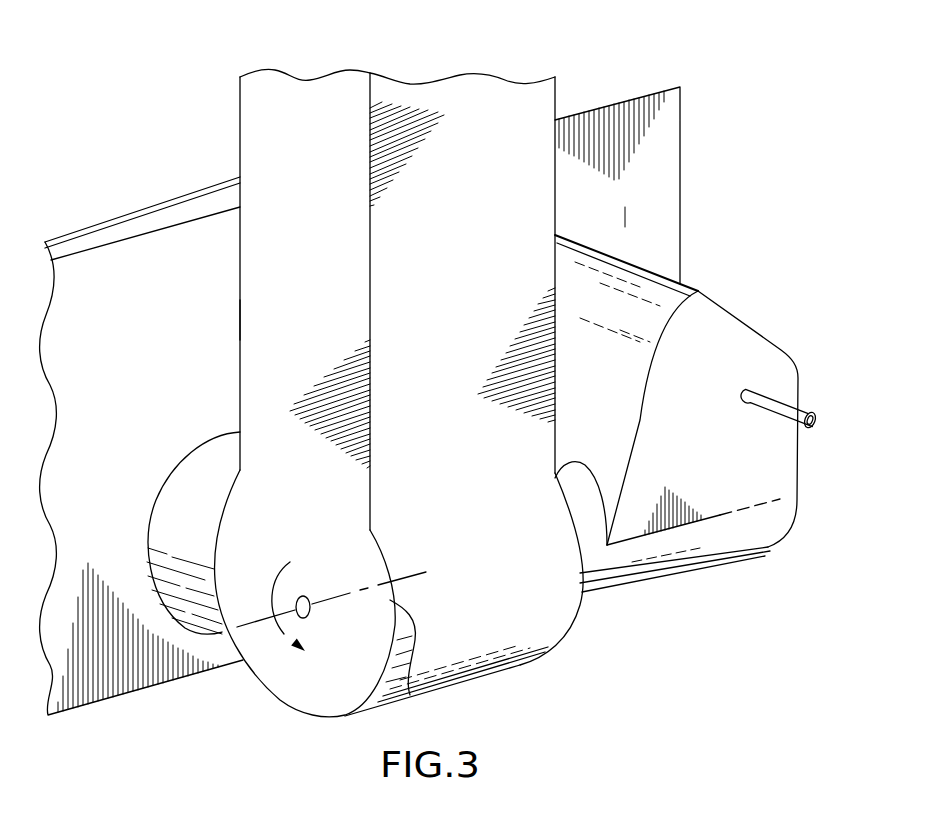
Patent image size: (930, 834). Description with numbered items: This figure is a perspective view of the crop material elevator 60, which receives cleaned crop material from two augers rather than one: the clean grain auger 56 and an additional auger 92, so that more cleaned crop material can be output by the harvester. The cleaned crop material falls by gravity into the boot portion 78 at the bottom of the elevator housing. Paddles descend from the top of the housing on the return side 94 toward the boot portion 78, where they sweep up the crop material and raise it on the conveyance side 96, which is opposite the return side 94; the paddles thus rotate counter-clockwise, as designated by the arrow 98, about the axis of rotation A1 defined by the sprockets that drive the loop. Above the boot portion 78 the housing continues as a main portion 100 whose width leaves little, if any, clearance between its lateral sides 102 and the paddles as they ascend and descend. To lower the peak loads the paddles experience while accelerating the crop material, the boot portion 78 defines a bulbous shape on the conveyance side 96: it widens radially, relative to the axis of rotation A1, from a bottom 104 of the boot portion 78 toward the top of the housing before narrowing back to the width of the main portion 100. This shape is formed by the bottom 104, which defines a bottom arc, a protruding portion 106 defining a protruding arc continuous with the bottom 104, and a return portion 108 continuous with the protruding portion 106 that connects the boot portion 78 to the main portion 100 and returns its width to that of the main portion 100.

The lateral sides 102 is at (240, 276).
The return side 94 is at (240, 330).
The main portion 100 is at (540, 222).
The additional auger 92 is at (727, 297).
The conveyance side 96 is at (540, 483).
The clean grain auger 56 is at (197, 432).
The boot portion 78 is at (296, 600).
The bottom 104 is at (275, 688).
The arrow 98 is at (278, 586).
The axis of rotation A1 is at (236, 624).
The return portion 108 is at (410, 695).
The protruding portion 106 is at (487, 660).
The crop material elevator 60 is at (635, 632).